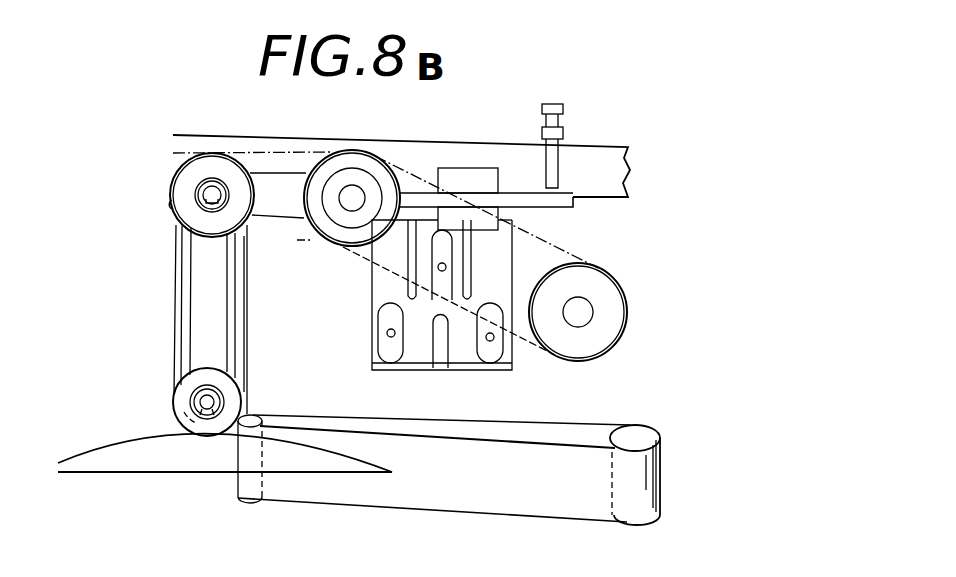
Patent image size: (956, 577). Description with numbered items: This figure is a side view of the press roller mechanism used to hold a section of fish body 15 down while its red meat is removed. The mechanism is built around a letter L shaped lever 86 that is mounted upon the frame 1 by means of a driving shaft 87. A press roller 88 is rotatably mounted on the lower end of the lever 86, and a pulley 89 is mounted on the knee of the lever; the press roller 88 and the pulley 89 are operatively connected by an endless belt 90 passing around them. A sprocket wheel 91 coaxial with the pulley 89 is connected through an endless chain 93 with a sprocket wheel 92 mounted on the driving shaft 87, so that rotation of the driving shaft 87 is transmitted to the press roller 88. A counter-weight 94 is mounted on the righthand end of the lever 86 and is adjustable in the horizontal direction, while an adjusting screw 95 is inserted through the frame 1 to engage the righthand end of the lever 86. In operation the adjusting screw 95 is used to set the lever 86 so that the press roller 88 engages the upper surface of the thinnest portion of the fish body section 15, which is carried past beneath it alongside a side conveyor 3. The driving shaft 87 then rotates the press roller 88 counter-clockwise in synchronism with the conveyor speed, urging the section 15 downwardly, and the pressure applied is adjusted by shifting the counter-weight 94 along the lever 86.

The frame 1 is at (421, 138).
The side conveyor 3 is at (550, 495).
The section of fish body 15 is at (166, 460).
The L-shaped lever 86 is at (283, 187).
The driving shaft 87 is at (350, 196).
The press roller 88 is at (177, 398).
The pulley 89 is at (182, 185).
The endless belt 90 is at (182, 296).
The sprocket wheel 91 is at (175, 205).
The sprocket wheel 92 is at (367, 258).
The endless chain 93 is at (272, 240).
The counter-weight 94 is at (510, 242).
The adjusting screw 95 is at (557, 175).